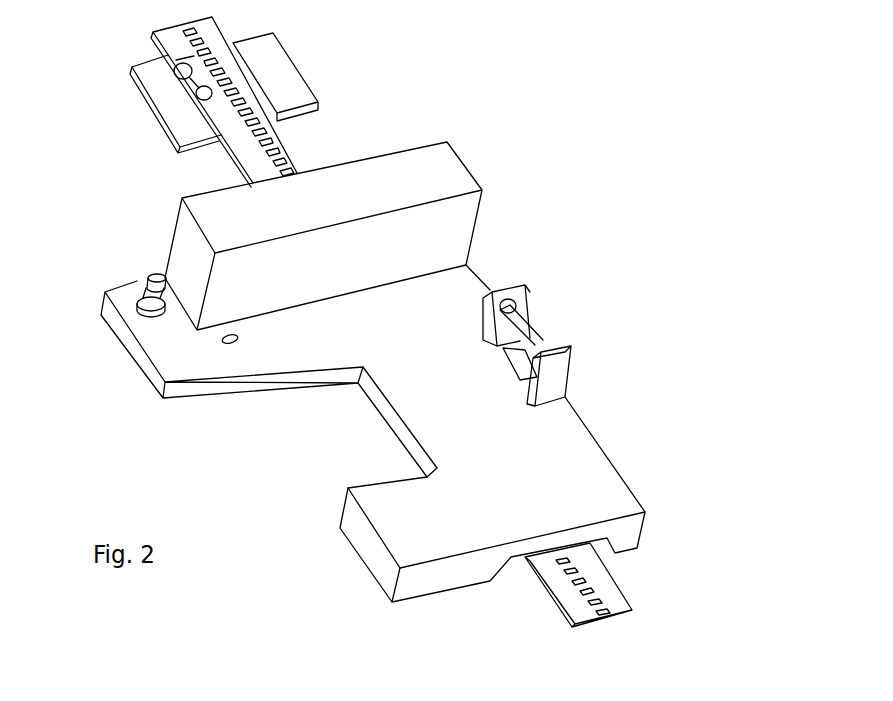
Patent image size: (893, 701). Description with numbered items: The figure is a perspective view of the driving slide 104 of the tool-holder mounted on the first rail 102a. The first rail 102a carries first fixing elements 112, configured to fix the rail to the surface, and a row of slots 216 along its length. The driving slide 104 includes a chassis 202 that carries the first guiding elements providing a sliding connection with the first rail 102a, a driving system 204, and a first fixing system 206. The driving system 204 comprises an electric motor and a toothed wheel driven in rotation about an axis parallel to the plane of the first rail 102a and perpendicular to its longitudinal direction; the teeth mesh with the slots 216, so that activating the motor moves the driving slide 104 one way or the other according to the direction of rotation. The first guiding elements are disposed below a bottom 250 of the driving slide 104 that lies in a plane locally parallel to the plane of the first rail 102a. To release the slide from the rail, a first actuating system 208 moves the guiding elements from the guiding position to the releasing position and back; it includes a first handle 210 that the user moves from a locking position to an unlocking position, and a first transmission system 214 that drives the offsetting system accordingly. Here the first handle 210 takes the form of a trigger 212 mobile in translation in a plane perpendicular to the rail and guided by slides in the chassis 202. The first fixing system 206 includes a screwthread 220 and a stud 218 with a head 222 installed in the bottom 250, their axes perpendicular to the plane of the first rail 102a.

The first rail 102a is at (168, 35).
The first fixing elements 112 is at (282, 78).
The slots 216 is at (282, 148).
The driving system 204 is at (487, 140).
The driving slide 104 is at (622, 183).
The first fixing system 206 is at (106, 355).
The stud 218 is at (140, 296).
The head 222 is at (151, 272).
The screwthread 220 is at (236, 346).
The chassis 202 is at (648, 512).
The bottom 250 is at (548, 494).
The first actuating system 208 is at (637, 271).
The first handle 210 is at (688, 306).
The first transmission system 214 is at (538, 335).
The trigger 212 is at (535, 345).